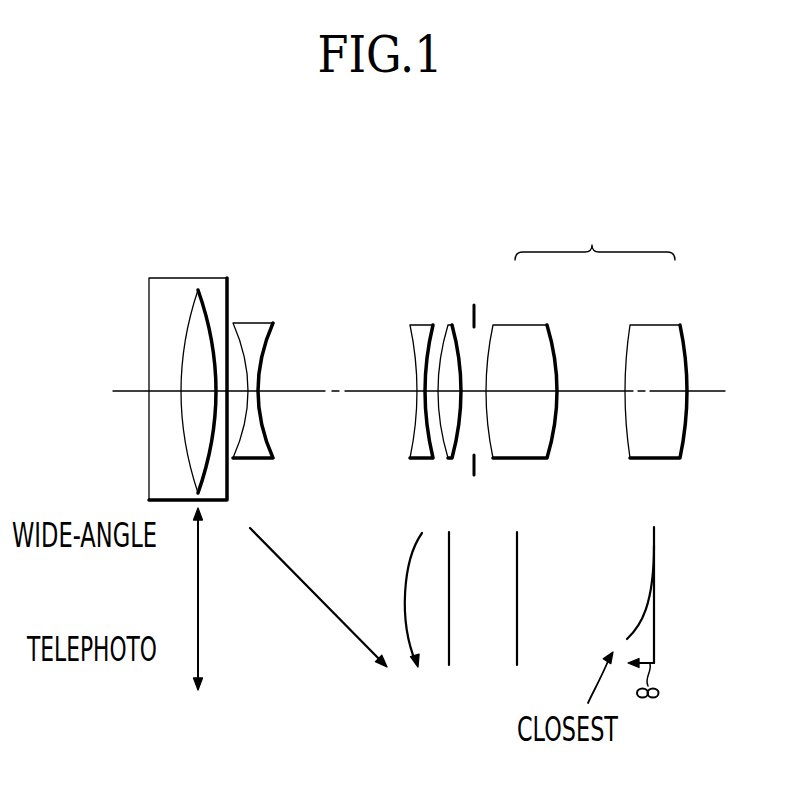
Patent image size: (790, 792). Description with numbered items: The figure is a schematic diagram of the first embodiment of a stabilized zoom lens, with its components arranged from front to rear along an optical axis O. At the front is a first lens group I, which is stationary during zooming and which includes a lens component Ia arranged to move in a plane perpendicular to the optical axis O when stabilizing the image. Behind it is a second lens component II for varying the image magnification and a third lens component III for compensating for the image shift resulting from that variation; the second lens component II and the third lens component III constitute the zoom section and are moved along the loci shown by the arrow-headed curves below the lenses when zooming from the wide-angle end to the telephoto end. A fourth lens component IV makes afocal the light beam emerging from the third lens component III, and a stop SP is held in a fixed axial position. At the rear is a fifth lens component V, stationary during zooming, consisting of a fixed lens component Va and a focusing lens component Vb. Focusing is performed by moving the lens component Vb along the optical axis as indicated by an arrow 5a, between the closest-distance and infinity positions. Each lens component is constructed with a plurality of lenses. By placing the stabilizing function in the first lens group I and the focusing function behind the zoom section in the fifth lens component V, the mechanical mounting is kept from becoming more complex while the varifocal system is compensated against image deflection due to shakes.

The first lens group I is at (167, 286).
The lens component Ia is at (200, 290).
The second lens component II is at (255, 327).
The third lens component III is at (421, 328).
The fourth lens component IV is at (449, 330).
The stop SP is at (476, 318).
The fifth lens component V is at (595, 234).
The fixed lens component Va is at (527, 328).
The focusing lens component Vb is at (654, 328).
The optical axis O is at (118, 393).
The arrow 5a is at (627, 640).